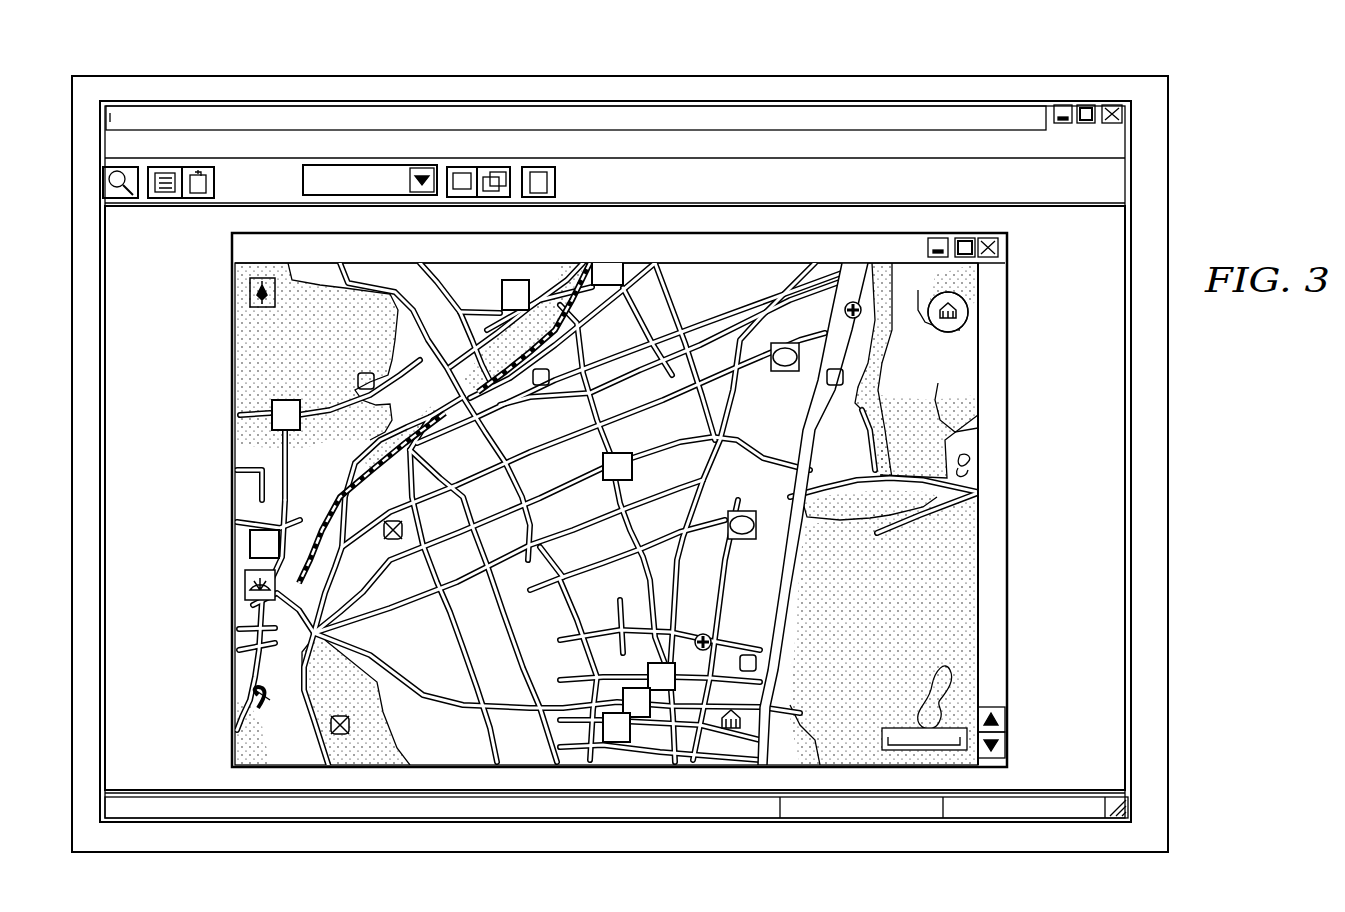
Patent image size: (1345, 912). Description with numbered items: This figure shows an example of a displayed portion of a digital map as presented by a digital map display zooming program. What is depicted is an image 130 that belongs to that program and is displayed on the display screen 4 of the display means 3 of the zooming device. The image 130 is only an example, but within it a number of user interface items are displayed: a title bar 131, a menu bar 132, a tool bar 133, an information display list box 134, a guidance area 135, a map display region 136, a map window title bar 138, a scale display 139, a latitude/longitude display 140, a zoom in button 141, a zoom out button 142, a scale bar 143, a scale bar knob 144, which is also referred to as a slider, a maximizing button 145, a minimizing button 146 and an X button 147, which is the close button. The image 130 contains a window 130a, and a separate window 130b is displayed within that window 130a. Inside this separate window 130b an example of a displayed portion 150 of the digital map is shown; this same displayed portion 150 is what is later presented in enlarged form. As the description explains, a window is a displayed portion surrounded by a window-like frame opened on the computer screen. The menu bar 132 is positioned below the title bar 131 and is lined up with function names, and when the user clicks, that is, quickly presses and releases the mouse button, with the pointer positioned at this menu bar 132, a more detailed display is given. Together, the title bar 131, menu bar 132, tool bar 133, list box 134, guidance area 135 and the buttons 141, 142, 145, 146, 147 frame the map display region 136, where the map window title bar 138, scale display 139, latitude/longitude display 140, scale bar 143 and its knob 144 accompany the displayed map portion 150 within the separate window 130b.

The display means 3 is at (1175, 442).
The display screen 4 is at (1168, 570).
The image 130 is at (545, 67).
The window 130a is at (1135, 503).
The separate window 130b is at (1020, 553).
The title bar 131 is at (113, 118).
The menu bar 132 is at (178, 148).
The tool bar 133 is at (224, 180).
The list box 134 is at (330, 170).
The guidance area 135 is at (143, 812).
The map display region 136 is at (212, 762).
The map window title bar 138 is at (252, 248).
The scale display 139 is at (953, 732).
The latitude/longitude display 140 is at (975, 812).
The zoom in button 141 is at (997, 755).
The zoom out button 142 is at (997, 712).
The scale bar 143 is at (1005, 308).
The scale bar knob 144 is at (1005, 617).
The maximizing button 145 is at (1087, 105).
The minimizing button 146 is at (1062, 105).
The X button 147 is at (1112, 105).
The displayed portion 150 is at (240, 690).